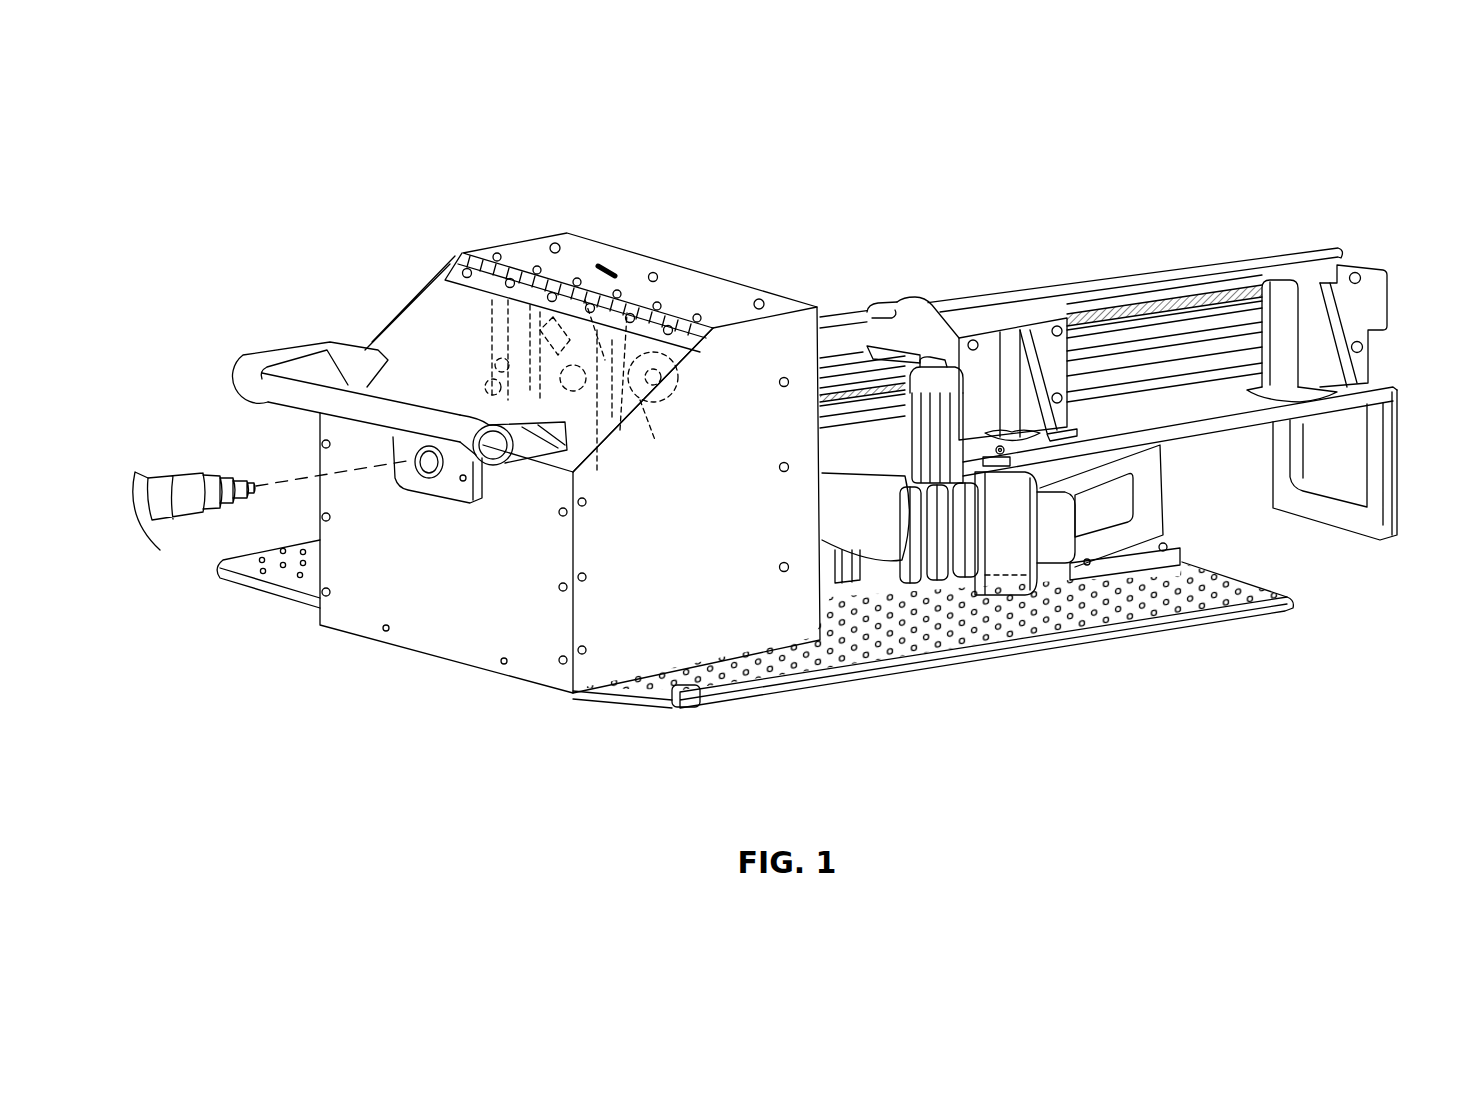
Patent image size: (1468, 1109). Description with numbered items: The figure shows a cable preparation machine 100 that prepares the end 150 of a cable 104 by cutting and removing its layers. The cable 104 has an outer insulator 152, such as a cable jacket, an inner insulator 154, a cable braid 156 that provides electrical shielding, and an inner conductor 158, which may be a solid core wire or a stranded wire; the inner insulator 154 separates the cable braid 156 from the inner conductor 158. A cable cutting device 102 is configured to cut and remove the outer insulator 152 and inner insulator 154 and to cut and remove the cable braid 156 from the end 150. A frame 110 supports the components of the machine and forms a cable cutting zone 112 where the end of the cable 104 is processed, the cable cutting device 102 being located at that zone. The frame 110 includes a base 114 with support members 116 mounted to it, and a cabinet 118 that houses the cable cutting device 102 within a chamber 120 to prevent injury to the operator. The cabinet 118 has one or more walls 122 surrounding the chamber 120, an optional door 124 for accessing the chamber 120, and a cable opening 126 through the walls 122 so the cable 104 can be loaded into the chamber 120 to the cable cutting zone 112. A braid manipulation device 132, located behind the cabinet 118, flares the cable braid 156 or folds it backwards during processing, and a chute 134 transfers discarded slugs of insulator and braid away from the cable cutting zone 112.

The cable preparation machine 100 is at (748, 155).
The cable cutting device 102 is at (583, 352).
The cable 104 is at (168, 533).
The frame 110 is at (1203, 636).
The cable cutting zone 112 is at (612, 395).
The base 114 is at (883, 667).
The support members 116 is at (1398, 435).
The cabinet 118 is at (640, 646).
The chamber 120 is at (420, 340).
The walls 122 is at (437, 264).
The door 124 is at (481, 295).
The cable opening 126 is at (410, 465).
The braid manipulation device 132 is at (1085, 272).
The chute 134 is at (1003, 575).
The end 150 is at (205, 540).
The outer insulator 152 is at (176, 480).
The inner insulator 154 is at (207, 473).
The cable braid 156 is at (220, 476).
The inner conductor 158 is at (236, 473).